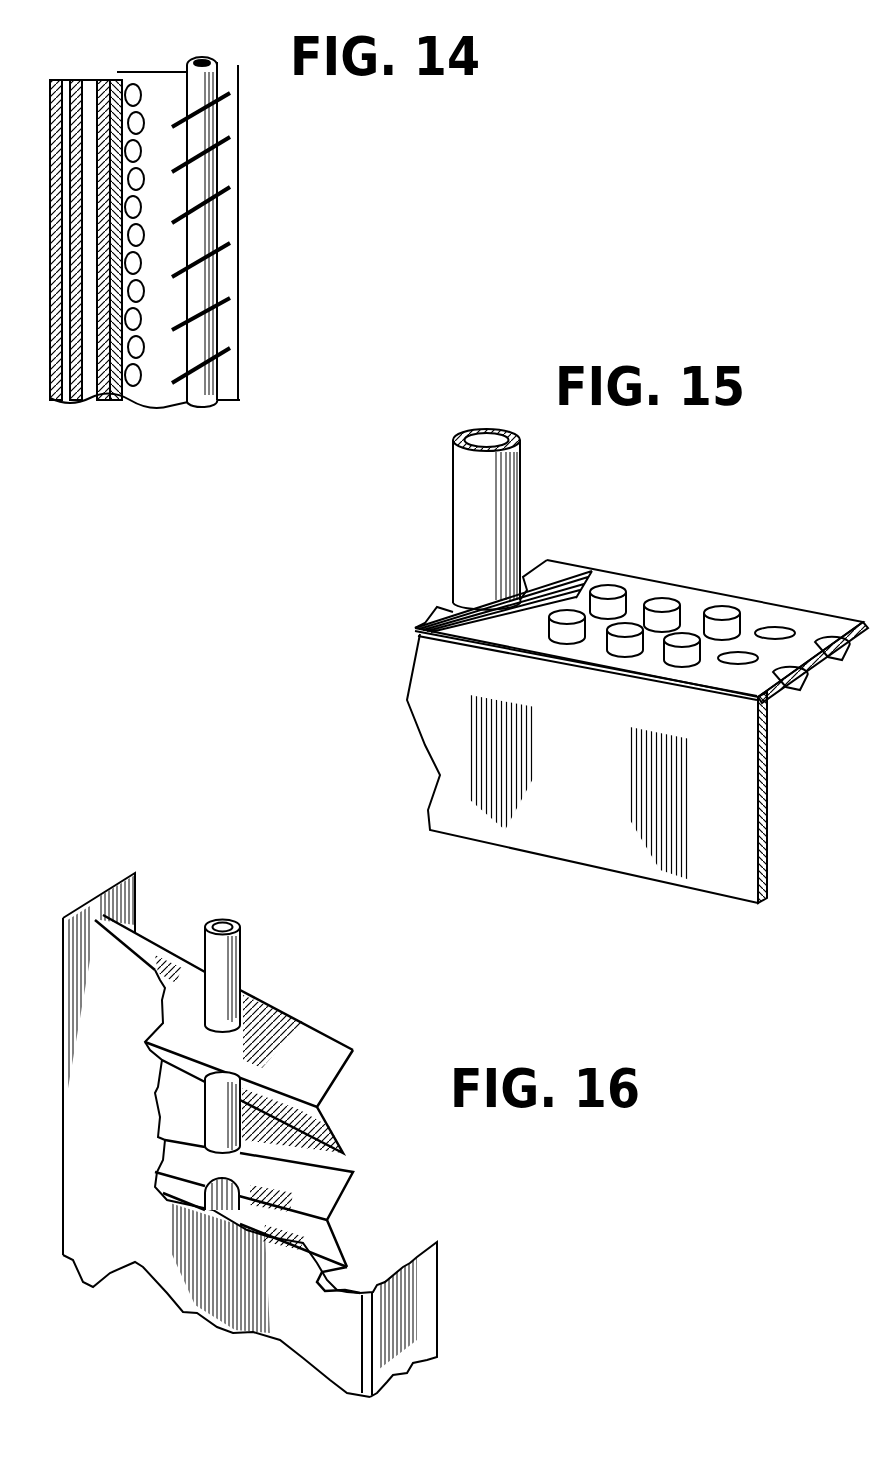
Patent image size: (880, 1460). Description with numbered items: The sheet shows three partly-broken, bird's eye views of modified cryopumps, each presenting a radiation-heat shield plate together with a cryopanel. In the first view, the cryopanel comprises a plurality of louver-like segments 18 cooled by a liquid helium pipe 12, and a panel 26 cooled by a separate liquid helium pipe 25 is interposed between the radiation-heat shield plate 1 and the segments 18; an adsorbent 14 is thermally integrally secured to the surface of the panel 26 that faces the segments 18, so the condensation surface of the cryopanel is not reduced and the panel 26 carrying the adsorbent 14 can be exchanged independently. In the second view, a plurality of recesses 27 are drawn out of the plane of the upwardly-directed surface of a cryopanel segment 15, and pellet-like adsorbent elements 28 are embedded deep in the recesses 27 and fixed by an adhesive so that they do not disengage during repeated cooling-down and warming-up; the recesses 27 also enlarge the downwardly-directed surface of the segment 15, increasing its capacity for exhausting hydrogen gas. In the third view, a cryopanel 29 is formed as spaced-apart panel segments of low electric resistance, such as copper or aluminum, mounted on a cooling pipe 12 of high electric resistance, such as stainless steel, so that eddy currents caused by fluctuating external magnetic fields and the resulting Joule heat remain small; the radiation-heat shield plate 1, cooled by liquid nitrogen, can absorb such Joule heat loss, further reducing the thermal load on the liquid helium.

In FIG. 14, the radiation-heat shield plate 1 is at (55, 262).
In FIG. 16, the radiation-heat shield plate 1 is at (78, 1094).
In FIG. 14, the liquid helium pipe 12 is at (217, 65).
In FIG. 15, the liquid helium pipe 12 is at (467, 525).
In FIG. 16, the liquid helium pipe 12 is at (236, 957).
In FIG. 14, the adsorbent 14 is at (134, 93).
In FIG. 15, the cryopanel segment 15 is at (733, 876).
In FIG. 14, the louver-like segments 18 is at (228, 140).
In FIG. 14, the liquid helium pipe 25 is at (100, 79).
In FIG. 14, the panel 26 is at (142, 45).
In FIG. 15, the recesses 27 is at (774, 630).
In FIG. 15, the pellet-like adsorbent elements 28 is at (721, 604).
In FIG. 16, the cryopanel 29 is at (333, 1062).